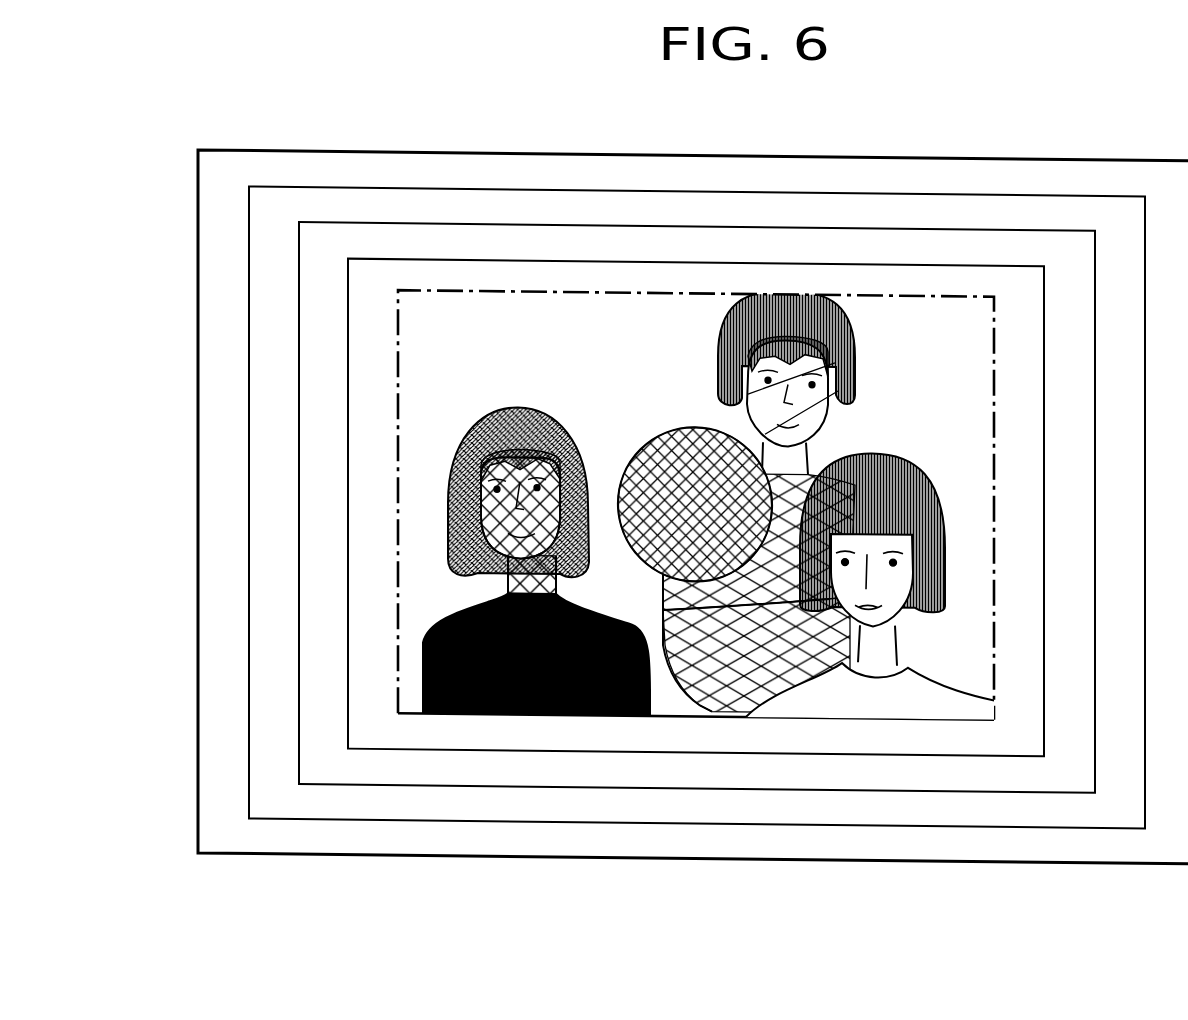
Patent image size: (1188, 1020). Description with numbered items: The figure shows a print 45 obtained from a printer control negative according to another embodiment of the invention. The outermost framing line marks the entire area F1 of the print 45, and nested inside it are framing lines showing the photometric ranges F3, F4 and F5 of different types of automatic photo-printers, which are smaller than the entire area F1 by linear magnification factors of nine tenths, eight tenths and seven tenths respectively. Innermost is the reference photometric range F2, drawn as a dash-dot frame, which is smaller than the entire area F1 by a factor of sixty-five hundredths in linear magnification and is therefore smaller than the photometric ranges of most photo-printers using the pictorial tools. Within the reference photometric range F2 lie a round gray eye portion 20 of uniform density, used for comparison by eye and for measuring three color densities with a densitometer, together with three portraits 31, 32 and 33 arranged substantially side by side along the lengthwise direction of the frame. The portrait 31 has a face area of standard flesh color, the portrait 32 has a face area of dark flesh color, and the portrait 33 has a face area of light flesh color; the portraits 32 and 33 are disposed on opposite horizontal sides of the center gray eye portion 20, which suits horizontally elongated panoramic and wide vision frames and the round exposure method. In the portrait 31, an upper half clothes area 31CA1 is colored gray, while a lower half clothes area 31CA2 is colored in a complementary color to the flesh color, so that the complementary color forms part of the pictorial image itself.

The print 45 is at (312, 150).
The entire area F1 is at (470, 149).
The reference photometric range F2 is at (665, 287).
The photometric range F3 is at (374, 185).
The photometric range F4 is at (393, 220).
The photometric range F5 is at (415, 256).
The eye portion 20 is at (640, 457).
The portrait 31 is at (713, 351).
The upper half clothes area 31CA1 is at (815, 471).
The lower half clothes area 31CA2 is at (712, 695).
The portrait 32 is at (513, 401).
The portrait 33 is at (931, 492).